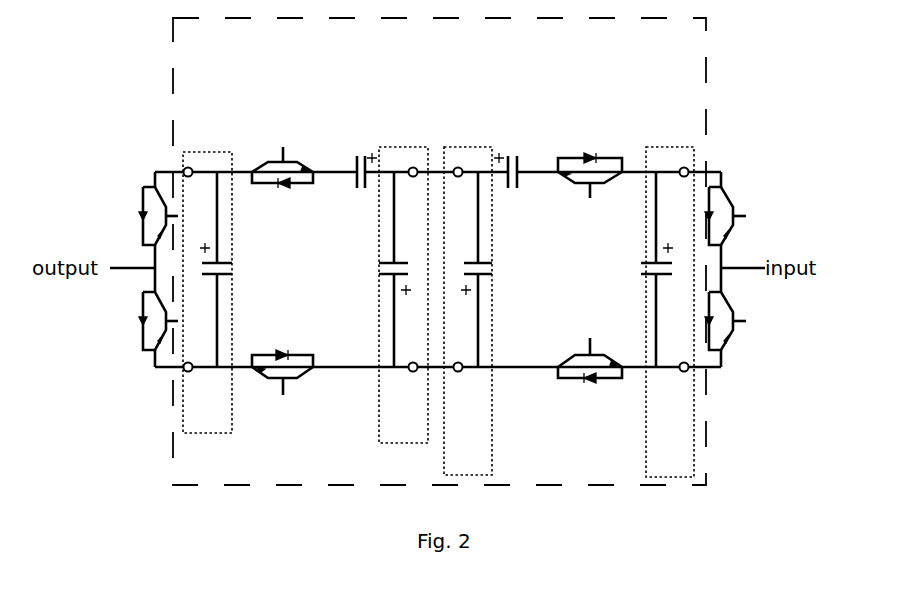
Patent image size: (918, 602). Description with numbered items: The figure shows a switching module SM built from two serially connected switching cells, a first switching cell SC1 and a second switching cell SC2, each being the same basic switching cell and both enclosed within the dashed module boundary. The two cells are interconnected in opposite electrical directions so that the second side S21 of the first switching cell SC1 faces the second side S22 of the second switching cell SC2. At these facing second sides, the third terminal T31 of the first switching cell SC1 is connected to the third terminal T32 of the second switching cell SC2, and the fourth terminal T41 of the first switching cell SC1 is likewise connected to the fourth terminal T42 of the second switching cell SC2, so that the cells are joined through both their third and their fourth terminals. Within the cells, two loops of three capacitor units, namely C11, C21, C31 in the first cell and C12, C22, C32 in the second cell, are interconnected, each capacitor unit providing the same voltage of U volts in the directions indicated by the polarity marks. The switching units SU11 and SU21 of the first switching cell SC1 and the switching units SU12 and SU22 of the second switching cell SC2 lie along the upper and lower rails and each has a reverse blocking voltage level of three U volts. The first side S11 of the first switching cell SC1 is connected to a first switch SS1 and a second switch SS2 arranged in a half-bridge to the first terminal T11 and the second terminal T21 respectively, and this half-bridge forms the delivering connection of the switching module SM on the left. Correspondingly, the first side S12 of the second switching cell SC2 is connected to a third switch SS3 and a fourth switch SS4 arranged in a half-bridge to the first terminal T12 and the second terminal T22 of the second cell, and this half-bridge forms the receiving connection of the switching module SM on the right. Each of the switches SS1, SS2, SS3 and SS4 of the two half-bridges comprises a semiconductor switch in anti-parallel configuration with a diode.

The switching module SM is at (439, 251).
The first switching cell SC1 is at (270, 118).
The second switching cell SC2 is at (553, 122).
The first switch SS1 is at (142, 222).
The second switch SS2 is at (142, 312).
The third switch SS3 is at (732, 222).
The fourth switch SS4 is at (734, 318).
The first switching unit of the first switching cell SU11 is at (298, 162).
The second switching unit of the first switching cell SU21 is at (296, 388).
The first switching unit of the second switching cell SU12 is at (590, 164).
The second switching unit of the second switching cell SU22 is at (590, 381).
The first capacitor unit of the first switching cell C11 is at (233, 272).
The second capacitor unit of the first switching cell C21 is at (378, 277).
The third capacitor unit of the first switching cell C31 is at (355, 190).
The first capacitor unit of the second switching cell C12 is at (631, 269).
The second capacitor unit of the second switching cell C22 is at (498, 269).
The third capacitor unit of the second switching cell C32 is at (514, 191).
The first side of the first switching cell S11 is at (207, 292).
The second side of the first switching cell S21 is at (403, 295).
The first side of the second switching cell S12 is at (670, 312).
The second side of the second switching cell S22 is at (468, 311).
The first terminal of the first switching cell T11 is at (184, 169).
The second terminal of the first switching cell T21 is at (184, 371).
The third terminal of the first switching cell T31 is at (411, 168).
The fourth terminal of the first switching cell T41 is at (410, 370).
The first terminal of the second switching cell T12 is at (688, 169).
The second terminal of the second switching cell T22 is at (688, 371).
The third terminal of the second switching cell T32 is at (457, 168).
The fourth terminal of the second switching cell T42 is at (459, 372).